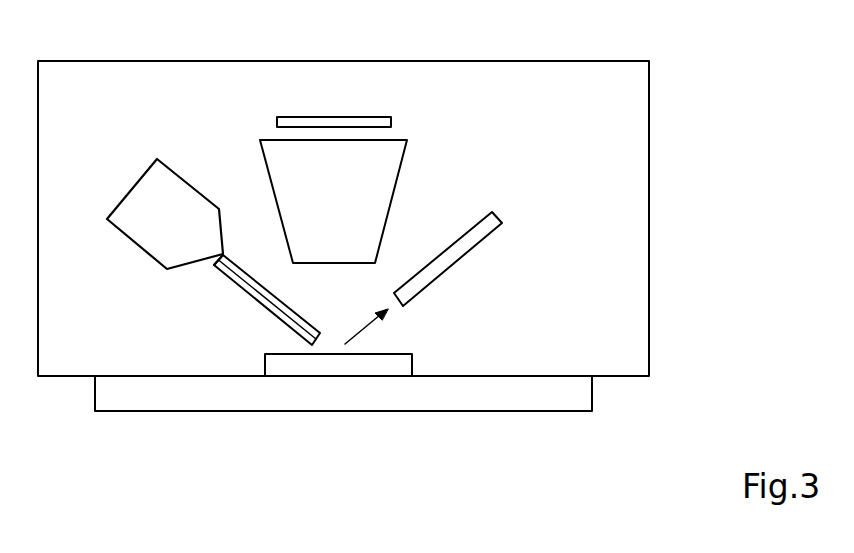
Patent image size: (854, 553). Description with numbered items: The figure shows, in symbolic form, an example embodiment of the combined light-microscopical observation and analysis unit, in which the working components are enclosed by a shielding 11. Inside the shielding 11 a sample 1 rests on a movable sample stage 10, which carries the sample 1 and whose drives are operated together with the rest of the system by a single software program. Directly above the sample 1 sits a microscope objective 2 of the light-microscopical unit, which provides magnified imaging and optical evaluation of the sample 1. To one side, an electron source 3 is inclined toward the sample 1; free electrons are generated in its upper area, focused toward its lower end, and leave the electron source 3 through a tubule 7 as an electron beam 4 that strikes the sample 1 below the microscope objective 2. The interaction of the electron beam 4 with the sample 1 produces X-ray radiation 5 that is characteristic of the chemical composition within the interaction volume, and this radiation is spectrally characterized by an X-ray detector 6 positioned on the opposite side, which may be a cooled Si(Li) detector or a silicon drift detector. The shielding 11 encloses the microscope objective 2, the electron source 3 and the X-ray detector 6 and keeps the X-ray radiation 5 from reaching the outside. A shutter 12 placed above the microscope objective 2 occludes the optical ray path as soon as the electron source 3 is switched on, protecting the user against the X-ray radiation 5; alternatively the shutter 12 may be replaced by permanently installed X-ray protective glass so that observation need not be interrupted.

The sample 1 is at (385, 370).
The microscope objective 2 is at (395, 162).
The electron source 3 is at (148, 182).
The electron beam 4 is at (275, 307).
The X-ray radiation 5 is at (363, 330).
The X-ray detector 6 is at (500, 223).
The tubule 7 is at (225, 277).
The movable sample stage 10 is at (580, 392).
The shielding 11 is at (650, 252).
The shutter 12 is at (362, 122).